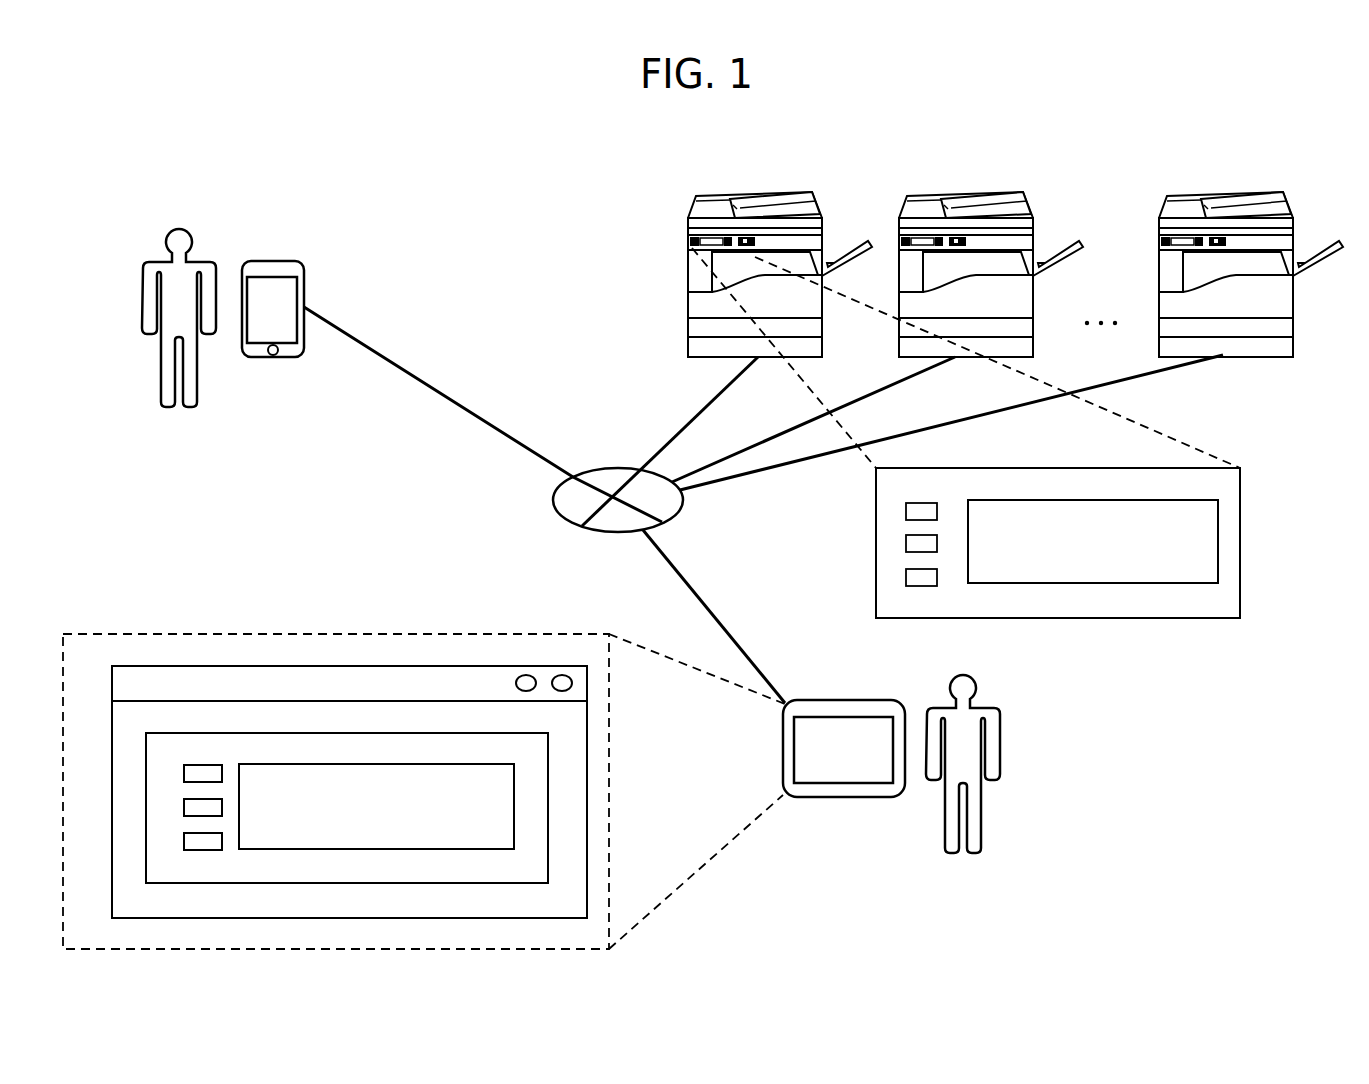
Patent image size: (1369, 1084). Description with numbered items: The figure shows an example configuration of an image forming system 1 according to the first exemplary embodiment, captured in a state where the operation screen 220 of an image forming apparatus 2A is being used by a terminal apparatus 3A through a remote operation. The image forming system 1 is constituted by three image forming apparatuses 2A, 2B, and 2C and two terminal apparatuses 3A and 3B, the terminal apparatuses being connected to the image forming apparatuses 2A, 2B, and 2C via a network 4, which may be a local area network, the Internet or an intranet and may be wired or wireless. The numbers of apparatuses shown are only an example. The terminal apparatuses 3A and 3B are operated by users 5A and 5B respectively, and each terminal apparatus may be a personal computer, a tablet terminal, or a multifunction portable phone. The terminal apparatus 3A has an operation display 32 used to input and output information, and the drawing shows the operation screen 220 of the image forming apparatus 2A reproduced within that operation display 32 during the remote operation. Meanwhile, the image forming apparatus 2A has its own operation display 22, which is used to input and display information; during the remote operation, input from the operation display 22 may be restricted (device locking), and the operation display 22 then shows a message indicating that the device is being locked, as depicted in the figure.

The image forming system 1 is at (1172, 138).
The image forming apparatus 2A is at (795, 192).
The image forming apparatus 2B is at (1005, 192).
The image forming apparatus 2C is at (1265, 193).
The terminal apparatus 3A is at (842, 700).
The terminal apparatus 3B is at (273, 261).
The network 4 is at (622, 468).
The user 5A is at (983, 706).
The user 5B is at (206, 262).
The operation display 22 is at (1241, 537).
The operation display 32 is at (336, 761).
The operation screen 220 is at (214, 665).